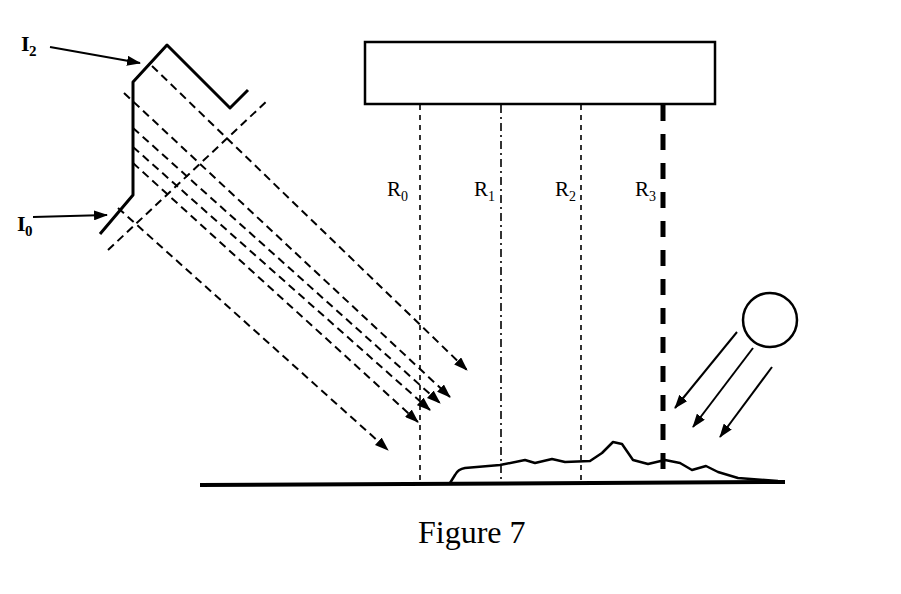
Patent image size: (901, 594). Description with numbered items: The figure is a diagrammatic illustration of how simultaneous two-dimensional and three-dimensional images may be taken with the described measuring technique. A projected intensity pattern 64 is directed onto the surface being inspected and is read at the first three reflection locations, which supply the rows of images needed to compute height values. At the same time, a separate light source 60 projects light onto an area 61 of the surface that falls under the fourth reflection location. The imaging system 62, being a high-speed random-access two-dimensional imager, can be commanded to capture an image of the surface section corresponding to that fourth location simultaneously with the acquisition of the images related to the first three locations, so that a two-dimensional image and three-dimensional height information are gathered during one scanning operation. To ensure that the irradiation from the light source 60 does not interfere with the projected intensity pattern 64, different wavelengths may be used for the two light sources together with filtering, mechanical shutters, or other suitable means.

The light source 60 is at (800, 293).
The area 61 is at (737, 493).
The imaging system 62 is at (733, 83).
The projected intensity pattern 64 is at (92, 253).